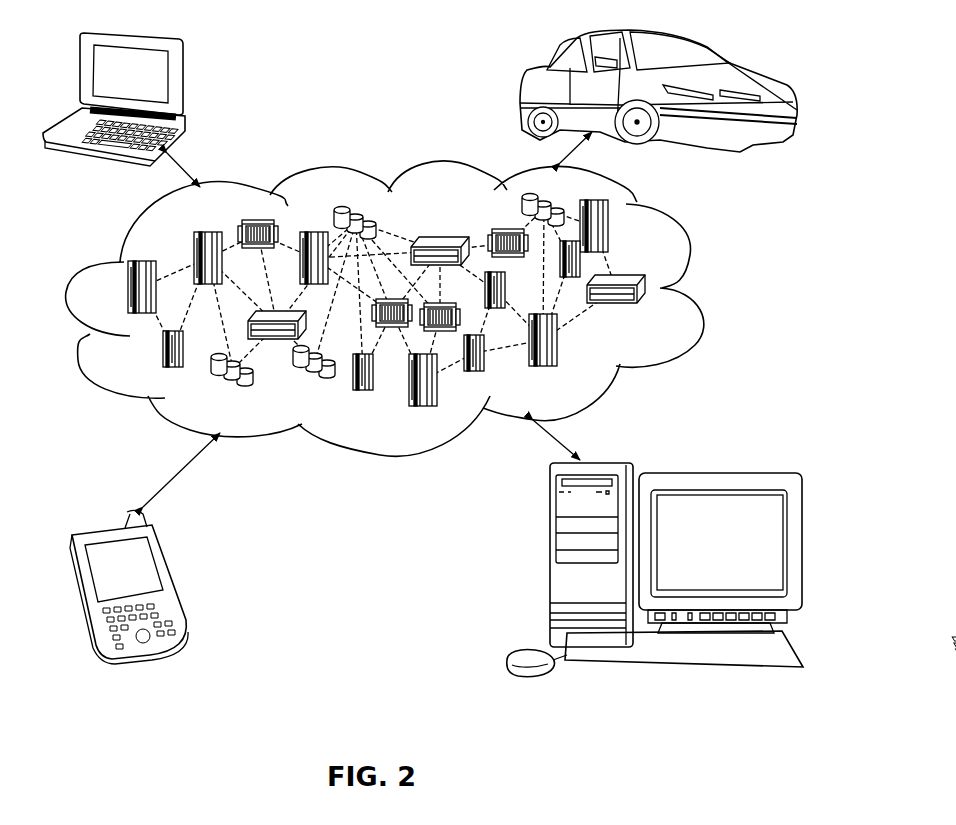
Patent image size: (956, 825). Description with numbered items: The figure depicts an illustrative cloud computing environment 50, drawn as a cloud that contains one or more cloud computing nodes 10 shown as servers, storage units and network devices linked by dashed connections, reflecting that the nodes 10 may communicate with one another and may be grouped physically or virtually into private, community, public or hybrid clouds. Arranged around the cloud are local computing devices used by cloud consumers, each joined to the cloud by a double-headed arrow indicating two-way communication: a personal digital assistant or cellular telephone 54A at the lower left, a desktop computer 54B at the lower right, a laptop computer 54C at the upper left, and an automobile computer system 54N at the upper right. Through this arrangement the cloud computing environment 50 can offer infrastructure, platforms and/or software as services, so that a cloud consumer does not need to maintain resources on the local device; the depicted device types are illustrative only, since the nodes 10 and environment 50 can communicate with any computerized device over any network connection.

The cloud computing node 10 is at (674, 310).
The cloud computing environment 50 is at (688, 252).
The personal digital assistant or cellular telephone 54A is at (172, 577).
The desktop computer 54B is at (547, 562).
The laptop computer 54C is at (183, 78).
The automobile computer system 54N is at (527, 80).